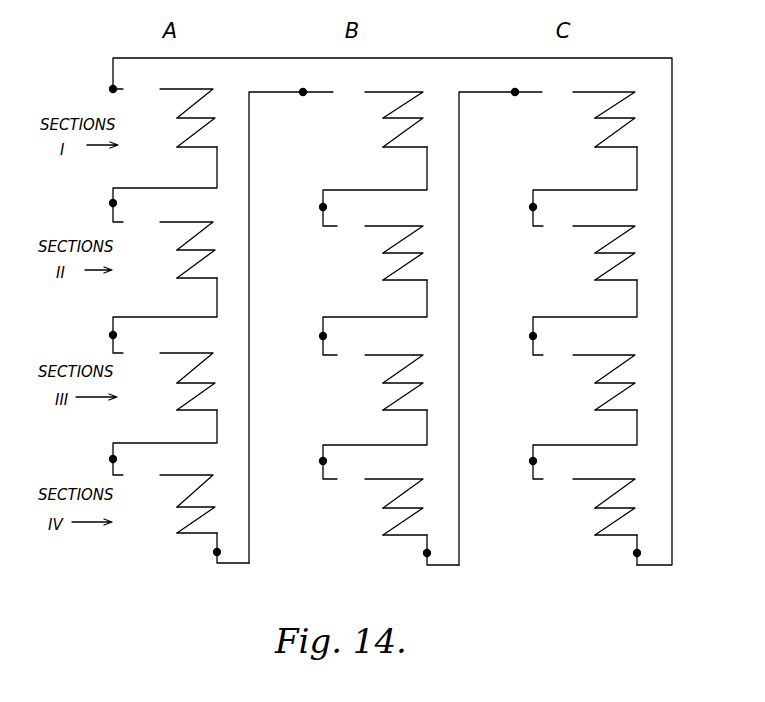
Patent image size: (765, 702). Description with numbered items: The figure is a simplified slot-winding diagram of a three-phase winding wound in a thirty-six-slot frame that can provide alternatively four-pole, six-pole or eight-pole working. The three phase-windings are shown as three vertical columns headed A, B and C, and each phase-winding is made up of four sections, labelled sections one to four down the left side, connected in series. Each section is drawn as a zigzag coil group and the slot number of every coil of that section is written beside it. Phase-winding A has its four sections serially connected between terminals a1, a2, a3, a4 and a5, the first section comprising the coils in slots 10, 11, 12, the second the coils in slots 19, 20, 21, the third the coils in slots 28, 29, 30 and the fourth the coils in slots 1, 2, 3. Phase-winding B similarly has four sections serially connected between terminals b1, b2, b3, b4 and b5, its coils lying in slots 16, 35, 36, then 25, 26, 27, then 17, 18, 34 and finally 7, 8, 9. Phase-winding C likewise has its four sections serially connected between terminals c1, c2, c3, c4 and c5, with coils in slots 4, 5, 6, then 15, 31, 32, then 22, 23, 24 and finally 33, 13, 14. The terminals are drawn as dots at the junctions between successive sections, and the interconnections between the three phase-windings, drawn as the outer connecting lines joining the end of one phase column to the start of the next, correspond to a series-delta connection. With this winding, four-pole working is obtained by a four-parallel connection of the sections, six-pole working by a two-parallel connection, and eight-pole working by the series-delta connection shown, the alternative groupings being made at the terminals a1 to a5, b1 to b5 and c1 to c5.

The coil slot number 1 is at (175, 485).
The coil slot number 2 is at (176, 514).
The coil slot number 3 is at (177, 534).
The coil slot number 4 is at (595, 99).
The coil slot number 5 is at (595, 127).
The coil slot number 6 is at (596, 148).
The coil slot number 7 is at (384, 488).
The coil slot number 8 is at (384, 516).
The coil slot number 9 is at (386, 536).
The coil slot number 10 is at (172, 98).
The coil slot number 11 is at (173, 127).
The coil slot number 12 is at (174, 148).
The coil slot number 13 is at (592, 516).
The coil slot number 14 is at (593, 536).
The coil slot number 15 is at (592, 234).
The coil slot number 16 is at (381, 99).
The coil slot number 17 is at (381, 363).
The coil slot number 18 is at (381, 391).
The coil slot number 19 is at (172, 230).
The coil slot number 20 is at (173, 258).
The coil slot number 21 is at (174, 279).
The coil slot number 22 is at (592, 363).
The coil slot number 23 is at (592, 391).
The coil slot number 24 is at (593, 411).
The coil slot number 25 is at (381, 234).
The coil slot number 26 is at (381, 261).
The coil slot number 27 is at (383, 281).
The coil slot number 28 is at (172, 362).
The coil slot number 29 is at (173, 391).
The coil slot number 30 is at (174, 411).
The coil slot number 31 is at (592, 261).
The coil slot number 32 is at (593, 281).
The coil slot number 33 is at (592, 488).
The coil slot number 34 is at (383, 411).
The coil slot number 35 is at (381, 127).
The coil slot number 36 is at (383, 148).
The terminal of phase-winding A a1 is at (113, 89).
The terminal of phase-winding A a2 is at (113, 203).
The terminal of phase-winding A a3 is at (113, 335).
The terminal of phase-winding A a4 is at (113, 459).
The terminal of phase-winding A a5 is at (217, 552).
The terminal of phase-winding B b1 is at (303, 92).
The terminal of phase-winding B b2 is at (323, 207).
The terminal of phase-winding B b3 is at (323, 336).
The terminal of phase-winding B b4 is at (323, 461).
The terminal of phase-winding B b5 is at (427, 553).
The terminal of phase-winding C c1 is at (515, 92).
The terminal of phase-winding C c2 is at (533, 207).
The terminal of phase-winding C c3 is at (533, 336).
The terminal of phase-winding C c4 is at (533, 461).
The terminal of phase-winding C c5 is at (637, 553).